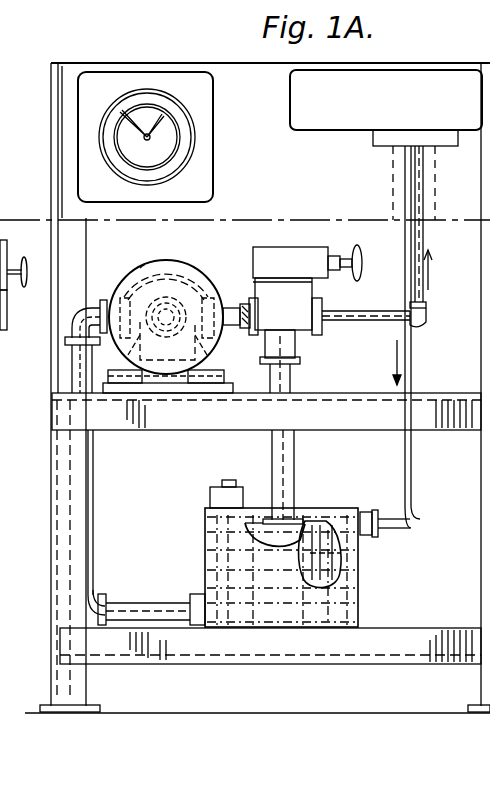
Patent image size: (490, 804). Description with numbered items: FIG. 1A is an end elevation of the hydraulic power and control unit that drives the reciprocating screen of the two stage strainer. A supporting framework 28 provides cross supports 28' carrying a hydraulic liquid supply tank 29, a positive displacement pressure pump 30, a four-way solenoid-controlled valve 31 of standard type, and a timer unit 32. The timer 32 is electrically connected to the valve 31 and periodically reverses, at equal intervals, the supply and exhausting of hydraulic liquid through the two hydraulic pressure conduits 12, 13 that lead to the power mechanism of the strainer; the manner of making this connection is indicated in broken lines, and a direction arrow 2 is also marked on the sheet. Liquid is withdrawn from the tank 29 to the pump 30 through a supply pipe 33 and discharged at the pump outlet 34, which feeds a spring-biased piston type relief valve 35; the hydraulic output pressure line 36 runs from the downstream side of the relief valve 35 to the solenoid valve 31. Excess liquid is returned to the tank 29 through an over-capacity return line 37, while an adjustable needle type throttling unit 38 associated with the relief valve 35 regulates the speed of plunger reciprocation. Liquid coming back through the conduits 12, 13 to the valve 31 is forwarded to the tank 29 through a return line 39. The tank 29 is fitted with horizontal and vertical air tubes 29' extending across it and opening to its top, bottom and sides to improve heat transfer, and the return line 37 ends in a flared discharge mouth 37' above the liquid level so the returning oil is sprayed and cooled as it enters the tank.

The valve / direction arrow 2 is at (20, 300).
The hydraulic pressure conduit 12 is at (252, 218).
The hydraulic pressure conduit 13 is at (157, 232).
The supporting framework 28 is at (245, 388).
The cross supports 28' is at (266, 528).
The hydraulic liquid supply tank 29 is at (359, 577).
The air tubes 29' is at (355, 530).
The positive displacement pressure pump 30 is at (138, 280).
The four-way solenoid-controlled valve 31 is at (312, 115).
The timer unit 32 is at (197, 112).
The supply pipe 33 is at (80, 378).
The pump outlet 34 is at (238, 305).
The relief valve 35 is at (280, 303).
The hydraulic output pressure line 36 is at (367, 316).
The over-capacity return line 37 is at (281, 528).
The flared discharge mouth 37' is at (266, 501).
The needle type throttling unit 38 is at (296, 268).
The return line 39 is at (412, 367).